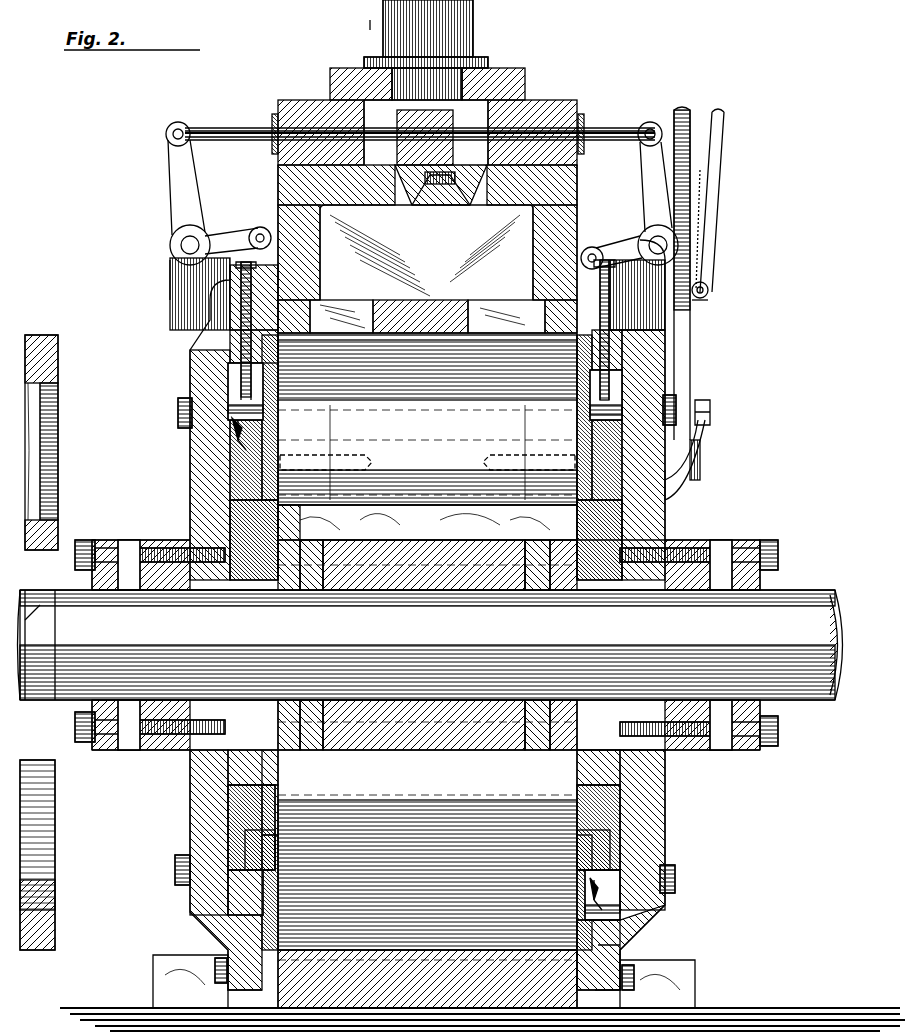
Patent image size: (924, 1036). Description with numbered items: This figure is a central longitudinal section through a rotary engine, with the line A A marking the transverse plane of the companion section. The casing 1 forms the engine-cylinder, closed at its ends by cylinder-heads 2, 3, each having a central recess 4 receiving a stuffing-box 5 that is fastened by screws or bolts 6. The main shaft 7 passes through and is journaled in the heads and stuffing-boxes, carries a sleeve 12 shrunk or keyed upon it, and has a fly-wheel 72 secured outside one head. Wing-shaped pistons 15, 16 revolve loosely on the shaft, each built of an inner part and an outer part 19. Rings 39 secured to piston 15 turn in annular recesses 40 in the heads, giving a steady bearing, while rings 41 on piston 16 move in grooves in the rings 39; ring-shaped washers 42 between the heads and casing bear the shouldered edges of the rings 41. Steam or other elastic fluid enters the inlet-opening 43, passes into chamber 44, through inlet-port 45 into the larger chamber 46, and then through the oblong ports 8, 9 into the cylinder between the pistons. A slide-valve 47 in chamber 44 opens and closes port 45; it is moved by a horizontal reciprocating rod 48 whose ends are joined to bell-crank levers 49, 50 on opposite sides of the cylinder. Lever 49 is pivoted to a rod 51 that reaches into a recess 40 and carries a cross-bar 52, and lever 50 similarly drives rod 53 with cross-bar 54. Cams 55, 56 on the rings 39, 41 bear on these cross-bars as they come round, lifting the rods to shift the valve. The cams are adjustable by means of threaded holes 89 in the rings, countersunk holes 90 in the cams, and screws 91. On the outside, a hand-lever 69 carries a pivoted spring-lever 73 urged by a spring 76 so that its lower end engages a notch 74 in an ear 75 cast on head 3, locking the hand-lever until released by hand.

The casing 1 is at (427, 879).
The cylinder-head 2 is at (190, 892).
The cylinder-head 3 is at (622, 870).
The recess 4 is at (165, 545).
The stuffing-box 5 is at (102, 545).
The screws or bolts 6 is at (130, 545).
The main shaft 7 is at (430, 645).
The inlet-port 8 is at (352, 300).
The inlet-port 9 is at (500, 302).
The sleeve 12 is at (415, 752).
The piston 15 is at (288, 752).
The piston 16 is at (312, 752).
The outer part of piston 19 is at (428, 385).
The rings 39 is at (278, 516).
The annular grooves or recesses 40 is at (230, 378).
The rings 41 is at (270, 440).
The ring-shaped washers 42 is at (278, 348).
The inlet-opening 43 is at (368, 55).
The chamber 44 is at (352, 112).
The inlet-port 45 is at (441, 188).
The chamber 46 is at (426, 252).
The slide-valve 47 is at (422, 112).
The reciprocating rod 48 is at (596, 132).
The bell-crank lever 49 is at (182, 190).
The bell-crank lever 50 is at (655, 192).
The rod 51 is at (228, 264).
The cross-bar 52 is at (228, 405).
The rod 53 is at (605, 352).
The cross-bar 54 is at (588, 412).
The cam 55 is at (235, 425).
The cam 56 is at (262, 416).
The hand-lever 69 is at (692, 120).
The fly-wheel 72 is at (50, 368).
The spring-lever 73 is at (714, 220).
The notch 74 is at (710, 410).
The ear 75 is at (700, 446).
The spring 76 is at (698, 175).
The screw-threaded holes 89 is at (240, 440).
The holes 90 is at (236, 422).
The screws 91 is at (262, 410).
The section line A is at (370, 62).